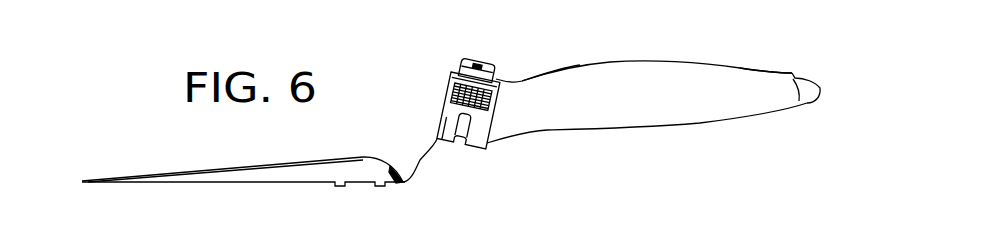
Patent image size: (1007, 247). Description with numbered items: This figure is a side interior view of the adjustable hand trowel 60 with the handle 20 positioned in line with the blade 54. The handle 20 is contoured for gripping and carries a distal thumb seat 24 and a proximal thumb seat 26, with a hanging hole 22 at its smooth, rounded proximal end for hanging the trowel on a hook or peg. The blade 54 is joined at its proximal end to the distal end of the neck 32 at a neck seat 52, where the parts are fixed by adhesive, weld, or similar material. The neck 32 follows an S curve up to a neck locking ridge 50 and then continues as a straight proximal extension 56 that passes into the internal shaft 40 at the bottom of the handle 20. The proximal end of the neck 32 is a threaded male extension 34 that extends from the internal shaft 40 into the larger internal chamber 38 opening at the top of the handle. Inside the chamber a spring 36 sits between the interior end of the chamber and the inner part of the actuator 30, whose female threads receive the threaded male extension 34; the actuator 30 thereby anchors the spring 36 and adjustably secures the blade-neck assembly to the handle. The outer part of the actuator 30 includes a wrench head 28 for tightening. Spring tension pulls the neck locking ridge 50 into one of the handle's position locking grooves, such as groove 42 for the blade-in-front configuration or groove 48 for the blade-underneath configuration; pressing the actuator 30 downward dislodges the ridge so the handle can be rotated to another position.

The adjustable hand trowel 60 is at (47, 125).
The handle 20 is at (667, 99).
The hanging hole 22 is at (805, 80).
The distal thumb seat 24 is at (524, 79).
The proximal thumb seat 26 is at (772, 73).
The wrench head 28 is at (484, 58).
The actuator 30 is at (471, 54).
The neck 32 is at (423, 162).
The threaded male extension 34 is at (495, 83).
The spring 36 is at (489, 100).
The internal chamber 38 is at (464, 107).
The internal shaft 40 is at (479, 126).
The position locking groove 42 is at (443, 131).
The position locking groove 48 is at (484, 148).
The neck locking ridge 50 is at (435, 133).
The neck seat 52 is at (398, 166).
The blade 54 is at (226, 178).
The proximal extension 56 is at (457, 112).